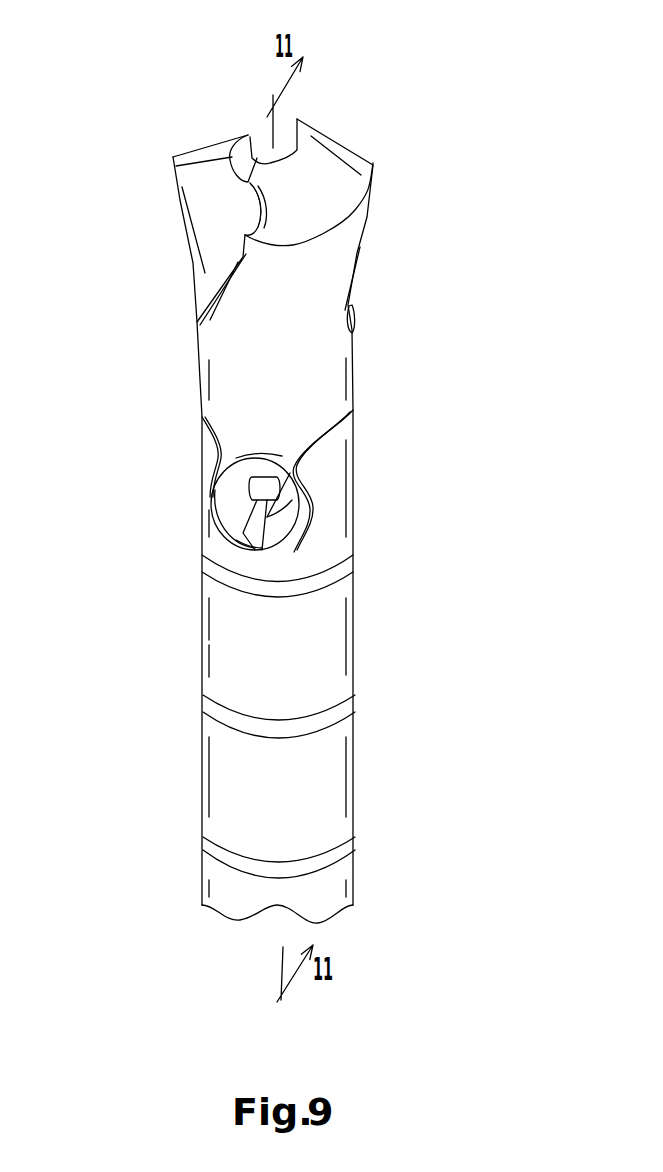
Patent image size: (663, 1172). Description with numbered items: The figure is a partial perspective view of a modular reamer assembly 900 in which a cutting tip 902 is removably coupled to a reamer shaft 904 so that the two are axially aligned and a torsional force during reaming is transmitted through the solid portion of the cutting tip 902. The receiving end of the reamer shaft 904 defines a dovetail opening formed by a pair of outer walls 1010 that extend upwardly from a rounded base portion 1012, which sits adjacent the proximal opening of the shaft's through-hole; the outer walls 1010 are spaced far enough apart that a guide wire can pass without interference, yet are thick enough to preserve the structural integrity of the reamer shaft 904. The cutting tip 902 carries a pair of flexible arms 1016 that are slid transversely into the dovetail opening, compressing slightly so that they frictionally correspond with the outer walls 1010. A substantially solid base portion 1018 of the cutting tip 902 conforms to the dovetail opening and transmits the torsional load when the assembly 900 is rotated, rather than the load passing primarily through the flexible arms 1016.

The reamer assembly 900 is at (152, 121).
The cutting tip 902 is at (332, 188).
The reamer shaft 904 is at (333, 773).
The outer walls 1010 is at (207, 458).
The rounded base portion 1012 is at (257, 548).
The flexible arms 1016 is at (232, 496).
The base portion 1018 is at (262, 440).